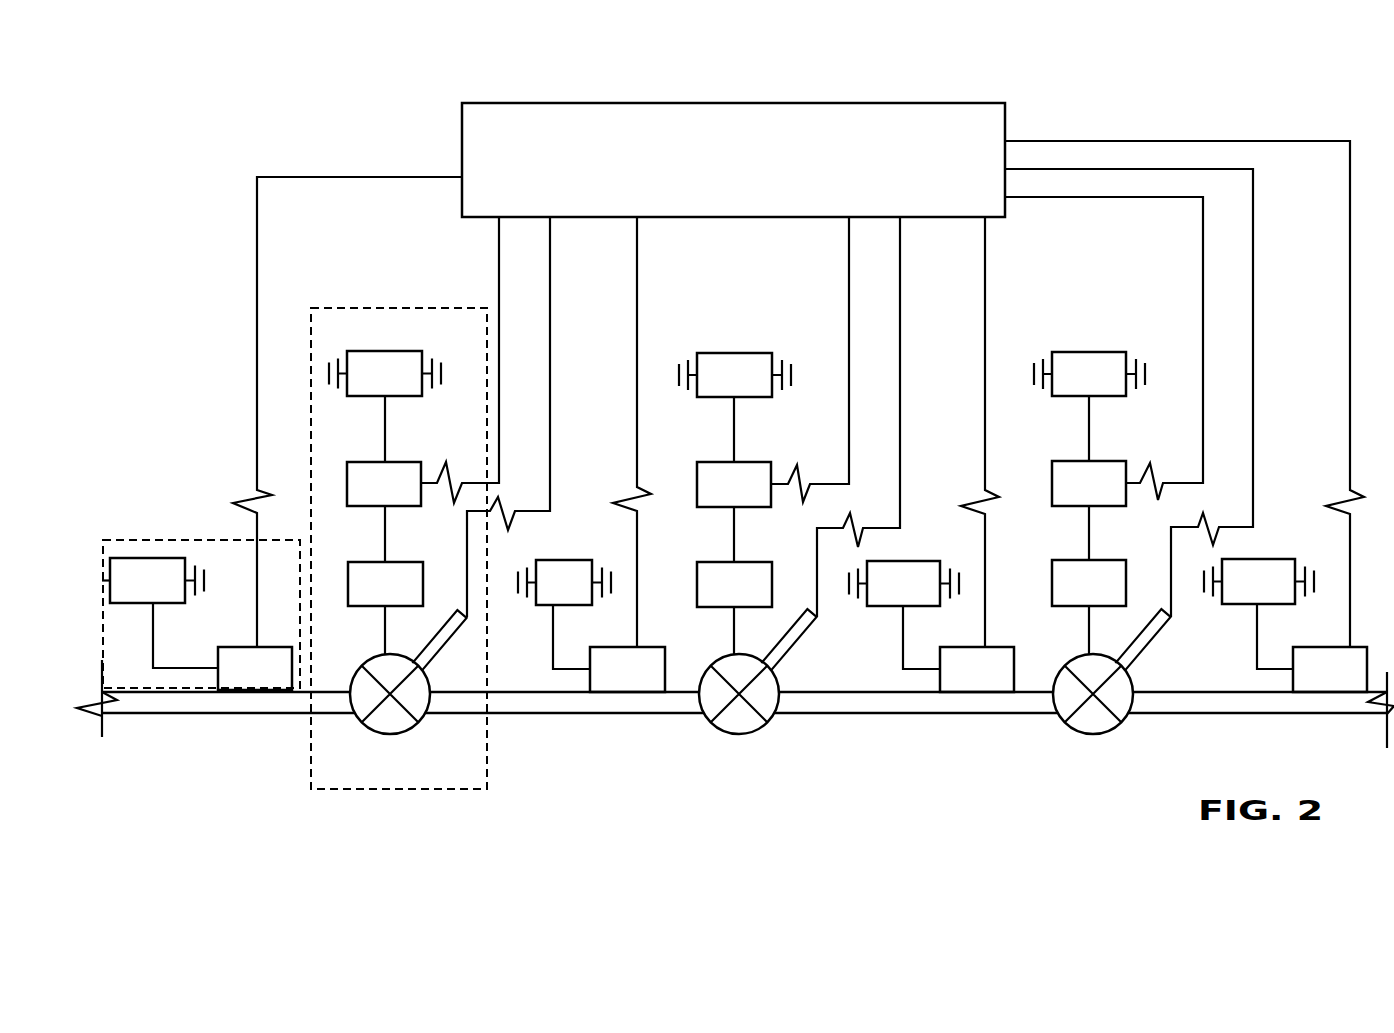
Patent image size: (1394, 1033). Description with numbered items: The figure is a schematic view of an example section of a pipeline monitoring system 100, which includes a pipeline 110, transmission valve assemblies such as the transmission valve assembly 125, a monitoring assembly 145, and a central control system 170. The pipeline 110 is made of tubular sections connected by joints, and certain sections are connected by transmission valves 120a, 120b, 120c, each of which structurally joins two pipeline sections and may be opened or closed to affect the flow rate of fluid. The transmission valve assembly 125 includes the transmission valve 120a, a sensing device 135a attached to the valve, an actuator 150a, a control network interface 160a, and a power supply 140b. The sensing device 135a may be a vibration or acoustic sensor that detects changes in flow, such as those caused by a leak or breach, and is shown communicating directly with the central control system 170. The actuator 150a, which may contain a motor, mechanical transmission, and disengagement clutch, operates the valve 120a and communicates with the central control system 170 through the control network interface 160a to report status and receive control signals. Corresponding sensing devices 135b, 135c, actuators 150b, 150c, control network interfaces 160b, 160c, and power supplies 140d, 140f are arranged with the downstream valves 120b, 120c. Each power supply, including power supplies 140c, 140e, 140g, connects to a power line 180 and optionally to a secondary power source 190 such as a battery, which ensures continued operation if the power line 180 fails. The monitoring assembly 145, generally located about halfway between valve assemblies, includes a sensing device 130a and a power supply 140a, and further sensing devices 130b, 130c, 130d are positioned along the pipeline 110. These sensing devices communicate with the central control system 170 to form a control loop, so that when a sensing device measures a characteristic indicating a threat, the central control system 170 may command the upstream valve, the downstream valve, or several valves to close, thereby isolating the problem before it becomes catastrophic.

The pipeline monitoring system 100 is at (266, 140).
The pipeline 110 is at (235, 705).
The transmission valve 120a is at (390, 711).
The transmission valve 120b is at (739, 711).
The transmission valve 120c is at (1093, 710).
The transmission valve assembly 125 is at (485, 773).
The sensing device 130a is at (255, 668).
The sensing device 130b is at (627, 669).
The sensing device 130c is at (977, 669).
The sensing device 130d is at (1330, 669).
The sensing device 135a is at (448, 649).
The sensing device 135b is at (798, 646).
The sensing device 135c is at (1155, 646).
The power supply 140a is at (143, 580).
The power supply 140b is at (384, 373).
The power supply 140c is at (564, 582).
The power supply 140d is at (734, 375).
The power supply 140e is at (903, 583).
The power supply 140f is at (1089, 374).
The power supply 140g is at (1258, 581).
The monitoring assembly 145 is at (146, 540).
The actuator 150a is at (385, 584).
The actuator 150b is at (734, 584).
The actuator 150c is at (1089, 583).
The control network interface 160a is at (384, 484).
The control network interface 160b is at (734, 484).
The control network interface 160c is at (1089, 483).
The central control system 170 is at (752, 172).
The power line 180 is at (770, 459).
The secondary power source 190 is at (763, 463).